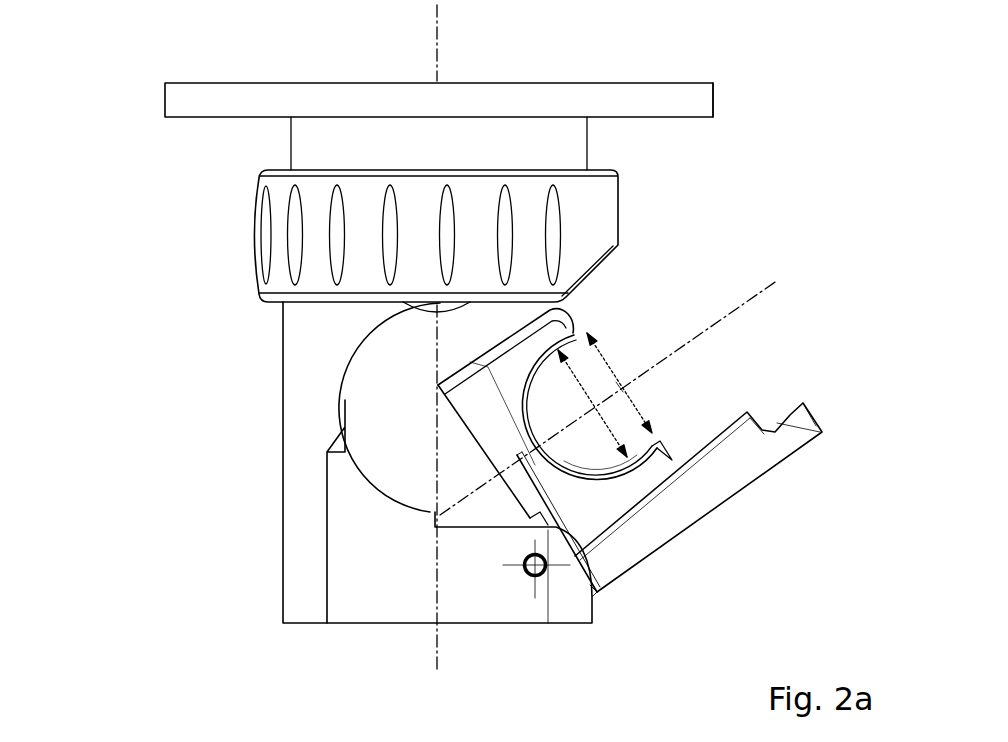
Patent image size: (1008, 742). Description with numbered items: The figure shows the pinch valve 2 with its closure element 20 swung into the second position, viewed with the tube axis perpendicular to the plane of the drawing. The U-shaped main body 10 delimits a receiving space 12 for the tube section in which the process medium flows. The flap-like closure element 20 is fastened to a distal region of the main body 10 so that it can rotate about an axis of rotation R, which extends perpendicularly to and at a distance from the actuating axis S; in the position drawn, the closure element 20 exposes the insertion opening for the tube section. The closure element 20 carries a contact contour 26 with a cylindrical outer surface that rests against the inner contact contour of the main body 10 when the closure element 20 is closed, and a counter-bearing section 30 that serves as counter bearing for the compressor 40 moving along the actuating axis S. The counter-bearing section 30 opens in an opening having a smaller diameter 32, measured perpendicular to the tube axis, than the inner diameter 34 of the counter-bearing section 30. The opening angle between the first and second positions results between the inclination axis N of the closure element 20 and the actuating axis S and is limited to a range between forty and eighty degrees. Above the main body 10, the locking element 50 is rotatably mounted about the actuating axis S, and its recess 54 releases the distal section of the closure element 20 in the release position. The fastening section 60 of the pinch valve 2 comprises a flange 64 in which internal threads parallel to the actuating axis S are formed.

The pinch valve 2 is at (113, 194).
The main body 10 is at (300, 605).
The receiving space 12 is at (385, 390).
The closure element 20 is at (522, 453).
The contact contour 26 is at (475, 457).
The counter-bearing section 30 is at (577, 462).
The smaller diameter 32 is at (595, 425).
The inner diameter 34 is at (600, 405).
The compressor 40 is at (415, 303).
The locking element 50 is at (604, 210).
The recess 54 is at (616, 270).
The fastening section 60 is at (210, 62).
The flange 64 is at (697, 100).
The actuating axis S is at (430, 43).
The inclination axis N is at (775, 305).
The axis of rotation R is at (513, 580).